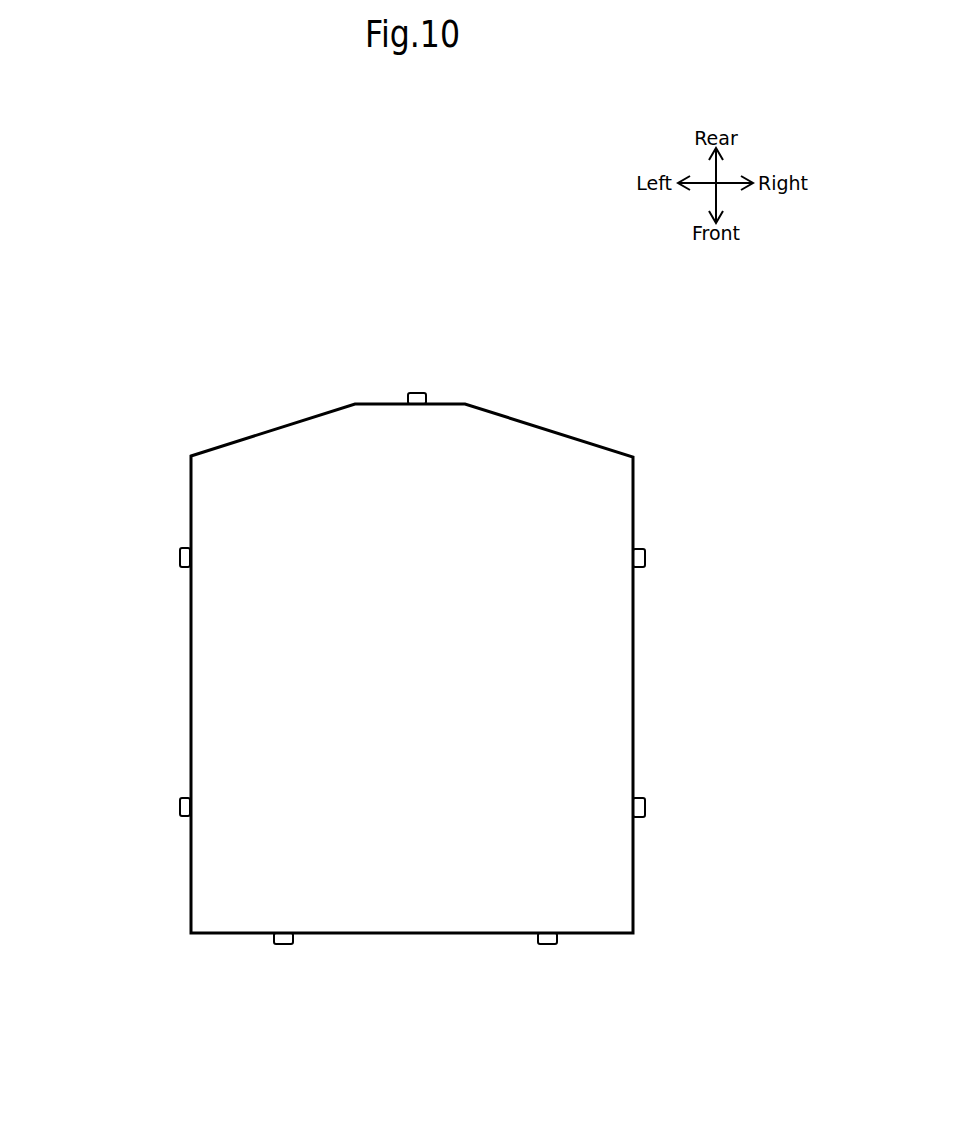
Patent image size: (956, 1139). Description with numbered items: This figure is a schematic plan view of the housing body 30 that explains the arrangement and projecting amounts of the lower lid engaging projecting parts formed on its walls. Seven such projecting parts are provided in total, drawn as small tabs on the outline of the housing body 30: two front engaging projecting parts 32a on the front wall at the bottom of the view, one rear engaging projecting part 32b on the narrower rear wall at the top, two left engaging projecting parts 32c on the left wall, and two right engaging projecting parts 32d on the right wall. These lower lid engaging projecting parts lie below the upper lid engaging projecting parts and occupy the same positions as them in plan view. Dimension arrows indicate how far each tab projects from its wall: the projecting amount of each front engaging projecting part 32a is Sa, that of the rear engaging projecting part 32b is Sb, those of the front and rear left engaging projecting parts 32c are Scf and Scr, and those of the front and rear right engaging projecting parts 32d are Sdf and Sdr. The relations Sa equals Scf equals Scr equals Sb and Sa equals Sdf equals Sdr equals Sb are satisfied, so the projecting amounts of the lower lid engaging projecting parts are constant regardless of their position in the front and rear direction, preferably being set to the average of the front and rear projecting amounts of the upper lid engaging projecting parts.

The housing body 30 is at (148, 470).
The front engaging projecting parts 32a is at (285, 946).
The rear engaging projecting part 32b is at (418, 393).
The left engaging projecting parts 32c is at (180, 558).
The right engaging projecting parts 32d is at (645, 558).
The projecting amount of front engaging projecting part Sa is at (323, 914).
The projecting amount of rear engaging projecting part Sb is at (379, 425).
The projecting amount of rear left engaging projecting part Scr is at (208, 535).
The projecting amount of front left engaging projecting part Scf is at (208, 785).
The projecting amount of rear right engaging projecting part Sdr is at (612, 520).
The projecting amount of front right engaging projecting part Sdf is at (612, 770).